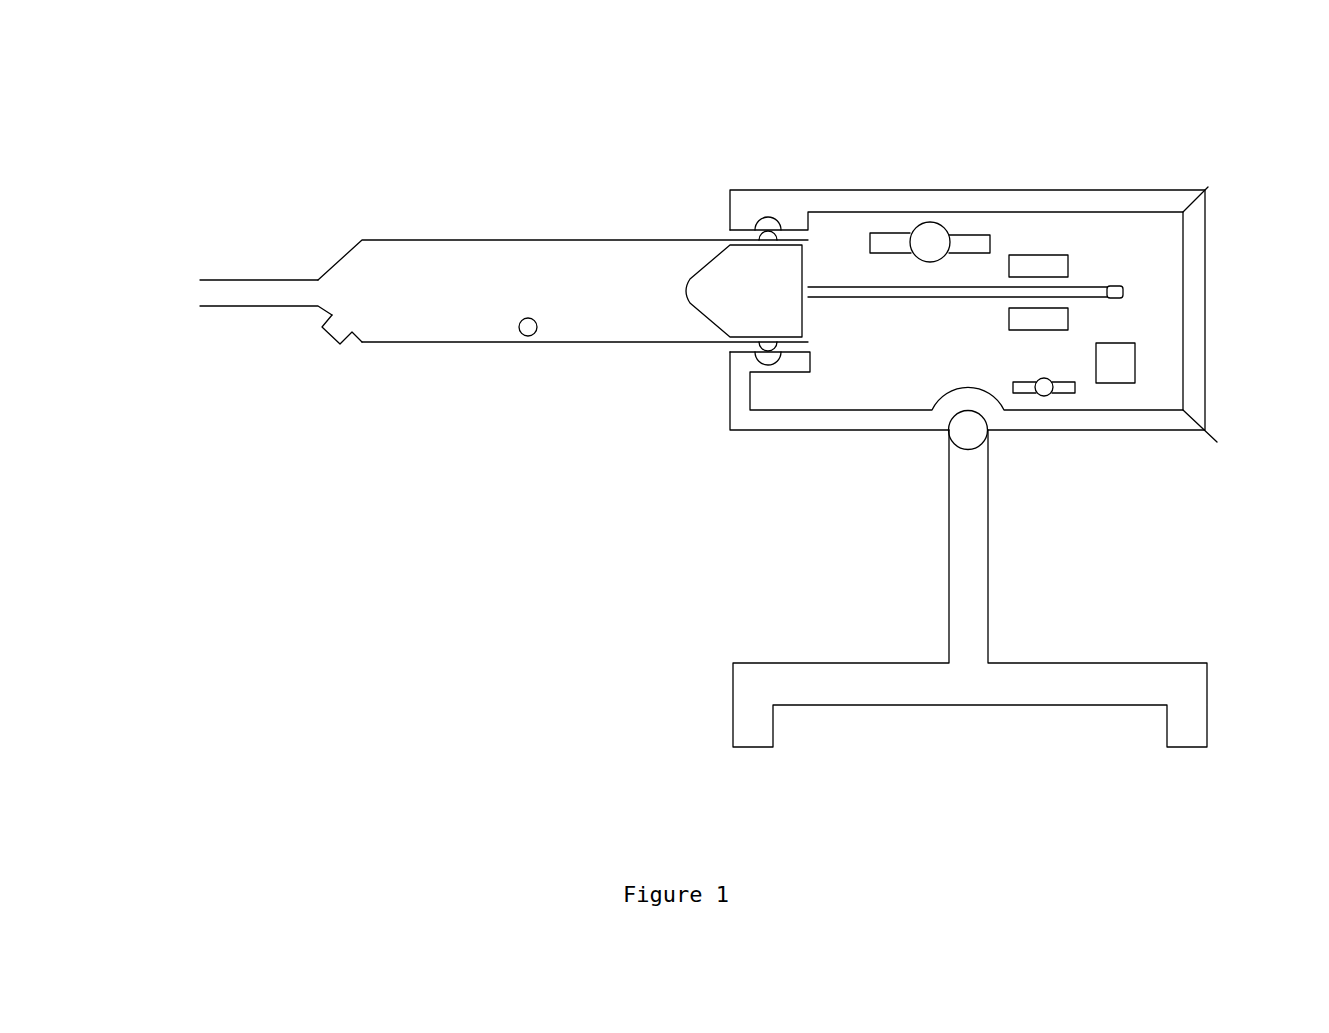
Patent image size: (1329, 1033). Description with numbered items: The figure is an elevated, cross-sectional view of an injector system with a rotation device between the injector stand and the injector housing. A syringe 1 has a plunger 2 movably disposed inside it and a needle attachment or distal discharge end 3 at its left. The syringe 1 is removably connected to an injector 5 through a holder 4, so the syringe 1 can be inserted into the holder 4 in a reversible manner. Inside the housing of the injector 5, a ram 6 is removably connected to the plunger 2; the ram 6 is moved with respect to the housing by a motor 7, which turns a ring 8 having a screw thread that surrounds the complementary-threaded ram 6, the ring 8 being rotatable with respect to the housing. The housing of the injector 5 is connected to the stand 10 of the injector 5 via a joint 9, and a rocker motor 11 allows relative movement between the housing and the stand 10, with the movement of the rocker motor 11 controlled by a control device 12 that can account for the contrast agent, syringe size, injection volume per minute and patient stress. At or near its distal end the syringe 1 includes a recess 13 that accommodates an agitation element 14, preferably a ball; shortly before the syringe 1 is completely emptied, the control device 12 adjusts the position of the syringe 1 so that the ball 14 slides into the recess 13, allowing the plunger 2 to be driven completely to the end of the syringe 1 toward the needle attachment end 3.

The syringe 1 is at (598, 265).
The plunger 2 is at (746, 270).
The needle attachment or distal discharge end 3 is at (257, 292).
The holder 4 is at (843, 205).
The injector 5 is at (1155, 202).
The ram 6 is at (1108, 290).
The motor 7 is at (975, 232).
The ring 8 is at (1047, 252).
The joint 9 is at (963, 433).
The stand 10 is at (1177, 692).
The rocker motor 11 is at (1075, 387).
The control device 12 is at (1117, 363).
The recess 13 is at (325, 333).
The agitation element 14 is at (535, 340).